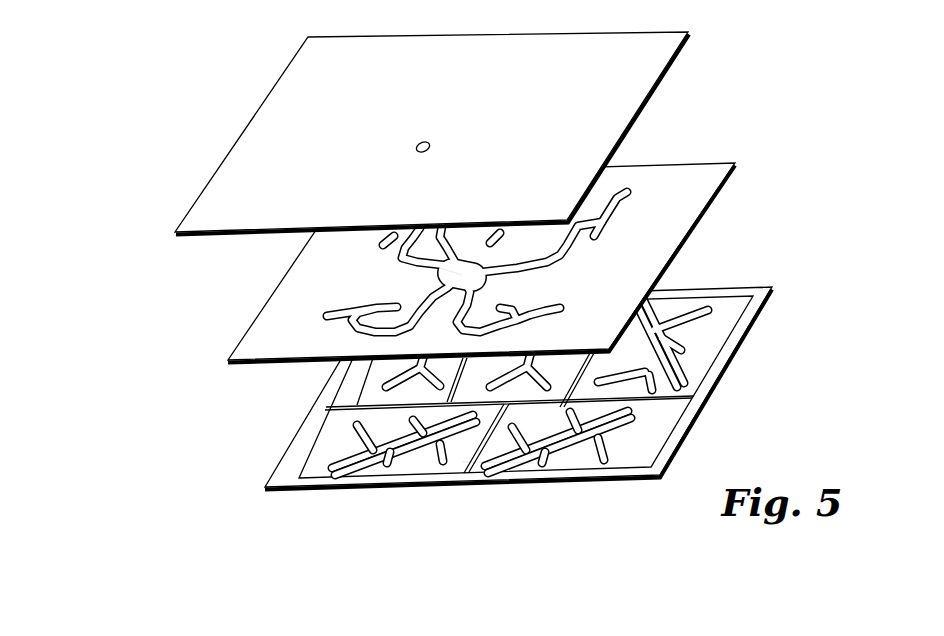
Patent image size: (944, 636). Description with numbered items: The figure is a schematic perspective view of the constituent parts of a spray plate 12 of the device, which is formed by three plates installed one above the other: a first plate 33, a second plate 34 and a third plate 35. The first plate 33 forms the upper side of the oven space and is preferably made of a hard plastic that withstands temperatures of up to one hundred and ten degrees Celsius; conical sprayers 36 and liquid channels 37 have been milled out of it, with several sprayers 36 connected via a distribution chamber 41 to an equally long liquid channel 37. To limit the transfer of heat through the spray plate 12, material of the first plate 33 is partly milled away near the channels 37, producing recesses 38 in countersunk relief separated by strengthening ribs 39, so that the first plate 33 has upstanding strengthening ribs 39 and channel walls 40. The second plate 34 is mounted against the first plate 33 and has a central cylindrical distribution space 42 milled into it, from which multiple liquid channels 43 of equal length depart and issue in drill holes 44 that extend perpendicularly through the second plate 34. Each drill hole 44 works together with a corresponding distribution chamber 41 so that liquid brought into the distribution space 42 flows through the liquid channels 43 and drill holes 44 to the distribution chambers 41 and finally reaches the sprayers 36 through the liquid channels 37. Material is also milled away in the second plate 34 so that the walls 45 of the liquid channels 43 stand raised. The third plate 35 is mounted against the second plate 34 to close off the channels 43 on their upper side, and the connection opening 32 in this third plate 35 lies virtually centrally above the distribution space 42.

The spray plate 12 is at (208, 90).
The inlet port 32 is at (427, 143).
The first plate 33 is at (757, 323).
The second plate 34 is at (690, 188).
The third plate 35 is at (627, 50).
The conical sprayer 36 is at (352, 468).
The liquid channel 37 is at (357, 465).
The recess 38 is at (707, 362).
The strengthening rib 39 is at (530, 463).
The channel wall 40 is at (690, 303).
The distribution chamber 41 is at (663, 380).
The central cylindrical distribution space 42 is at (470, 275).
The liquid channel 43 is at (325, 358).
The drill hole 44 is at (632, 198).
The wall 45 is at (437, 292).